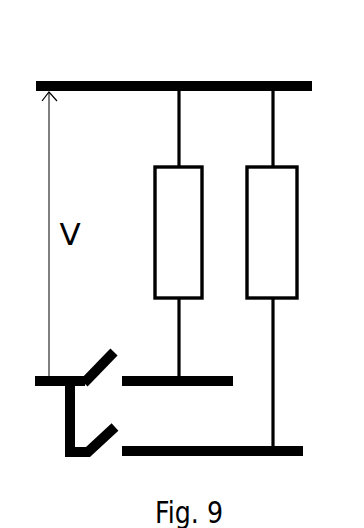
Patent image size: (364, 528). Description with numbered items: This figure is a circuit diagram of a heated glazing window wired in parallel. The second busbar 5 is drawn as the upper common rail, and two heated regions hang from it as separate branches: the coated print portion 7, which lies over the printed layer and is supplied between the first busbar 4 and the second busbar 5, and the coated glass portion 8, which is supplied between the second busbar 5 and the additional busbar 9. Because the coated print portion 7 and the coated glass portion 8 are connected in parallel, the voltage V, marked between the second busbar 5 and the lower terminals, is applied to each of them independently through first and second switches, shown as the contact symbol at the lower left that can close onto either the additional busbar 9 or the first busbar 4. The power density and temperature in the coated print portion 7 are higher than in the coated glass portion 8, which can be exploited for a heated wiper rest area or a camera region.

The second busbar 5 is at (280, 84).
The coated glass portion 8 is at (178, 232).
The coated print portion 7 is at (272, 232).
The additional busbar 9 is at (186, 381).
The first busbar 4 is at (280, 449).